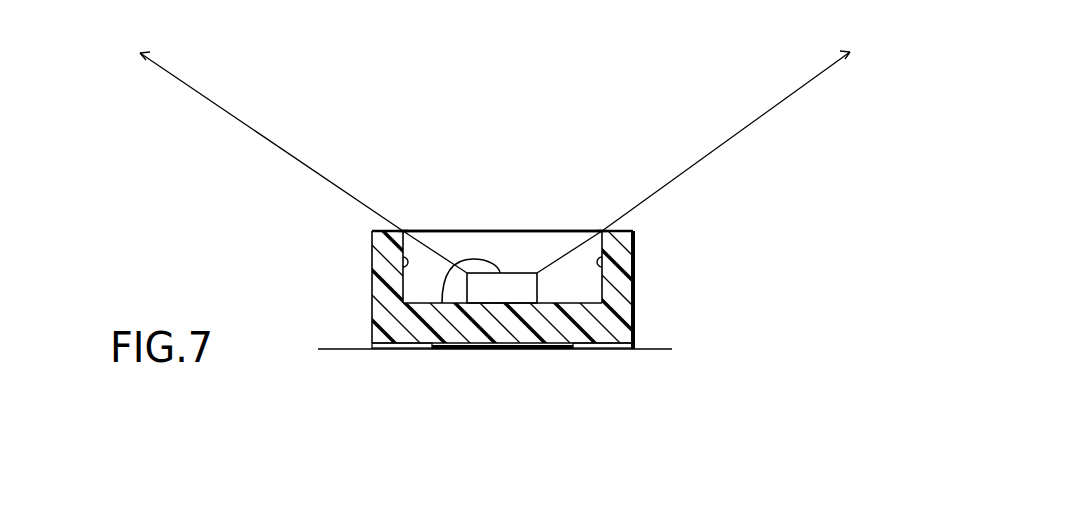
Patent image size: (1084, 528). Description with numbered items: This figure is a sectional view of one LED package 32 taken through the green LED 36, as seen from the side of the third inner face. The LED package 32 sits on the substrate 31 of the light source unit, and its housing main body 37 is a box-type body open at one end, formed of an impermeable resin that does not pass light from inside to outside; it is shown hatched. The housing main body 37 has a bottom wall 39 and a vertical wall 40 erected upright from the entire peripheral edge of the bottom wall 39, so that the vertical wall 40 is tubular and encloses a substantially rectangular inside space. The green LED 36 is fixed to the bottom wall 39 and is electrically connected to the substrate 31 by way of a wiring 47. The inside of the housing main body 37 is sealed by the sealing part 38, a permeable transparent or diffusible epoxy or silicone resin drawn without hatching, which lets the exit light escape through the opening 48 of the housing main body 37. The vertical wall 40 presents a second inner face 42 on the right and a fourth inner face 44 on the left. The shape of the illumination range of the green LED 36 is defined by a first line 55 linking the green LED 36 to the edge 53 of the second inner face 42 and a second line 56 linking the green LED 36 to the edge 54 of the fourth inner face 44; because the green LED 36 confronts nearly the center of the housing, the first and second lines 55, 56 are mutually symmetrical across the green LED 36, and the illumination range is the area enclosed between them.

The substrate 31 is at (385, 363).
The LED package 32 is at (508, 218).
The green LED 36 is at (517, 296).
The housing main body 37 is at (634, 320).
The sealing part 38 is at (472, 238).
The bottom wall 39 is at (592, 350).
The vertical wall 40 is at (379, 249).
The second inner face 42 is at (604, 266).
The fourth inner face 44 is at (404, 264).
The wiring 47 is at (453, 290).
The opening 48 is at (577, 237).
The edge 53 is at (602, 228).
The edge 54 is at (402, 228).
The first line 55 is at (755, 122).
The second line 56 is at (235, 115).